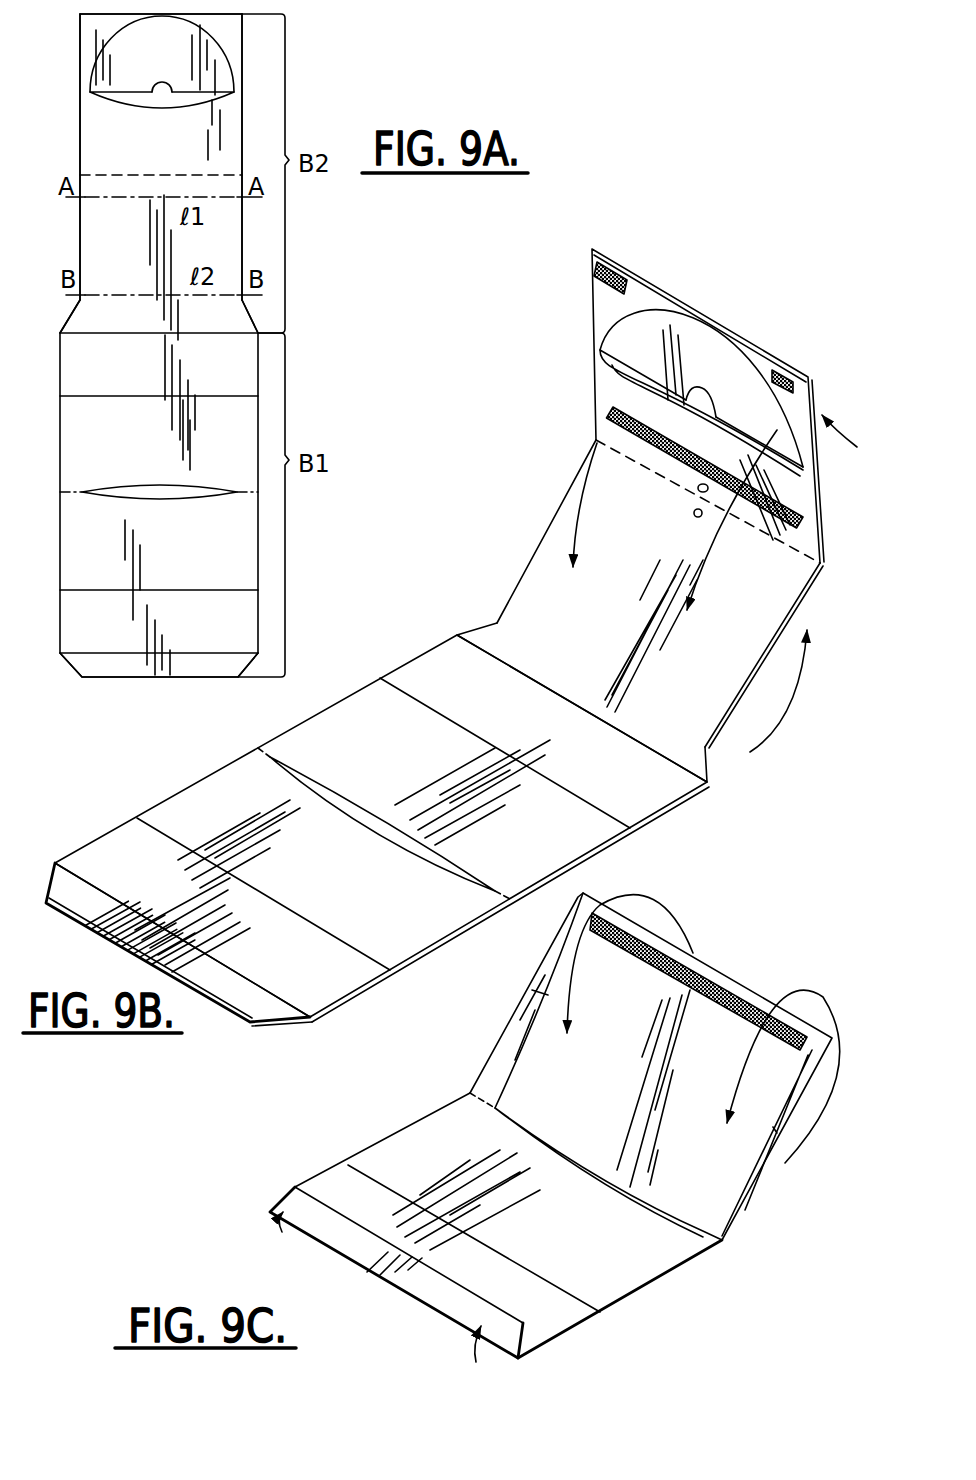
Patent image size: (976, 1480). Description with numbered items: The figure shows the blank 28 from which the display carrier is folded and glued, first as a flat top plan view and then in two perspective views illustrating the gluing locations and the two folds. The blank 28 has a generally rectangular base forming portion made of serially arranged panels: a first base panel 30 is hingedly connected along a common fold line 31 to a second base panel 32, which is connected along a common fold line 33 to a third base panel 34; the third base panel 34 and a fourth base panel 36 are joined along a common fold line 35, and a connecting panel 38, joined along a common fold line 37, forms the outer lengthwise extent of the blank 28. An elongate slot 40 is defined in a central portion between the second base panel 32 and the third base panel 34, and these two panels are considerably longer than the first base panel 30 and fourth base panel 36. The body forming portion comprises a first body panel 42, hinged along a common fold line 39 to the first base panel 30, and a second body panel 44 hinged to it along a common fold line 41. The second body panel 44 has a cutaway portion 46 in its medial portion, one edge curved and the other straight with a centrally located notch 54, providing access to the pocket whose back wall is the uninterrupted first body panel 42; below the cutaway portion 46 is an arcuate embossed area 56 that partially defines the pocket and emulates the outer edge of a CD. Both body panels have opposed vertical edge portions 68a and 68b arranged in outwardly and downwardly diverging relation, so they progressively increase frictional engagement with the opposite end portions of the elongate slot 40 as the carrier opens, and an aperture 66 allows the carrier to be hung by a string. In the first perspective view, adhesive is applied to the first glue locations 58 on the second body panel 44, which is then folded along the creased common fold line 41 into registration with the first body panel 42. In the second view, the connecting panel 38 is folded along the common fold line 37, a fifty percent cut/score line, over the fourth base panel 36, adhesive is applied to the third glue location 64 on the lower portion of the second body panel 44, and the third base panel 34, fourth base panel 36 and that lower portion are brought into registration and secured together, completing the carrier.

In FIG. 9A, the blank 28 is at (310, 58).
In FIG. 9B, the blank 28 is at (540, 466).
In FIG. 9C, the blank 28 is at (745, 1259).
In FIG. 9A, the first base panel 30 is at (70, 352).
In FIG. 9B, the first base panel 30 is at (418, 658).
In FIG. 9A, the common fold line 31 is at (73, 396).
In FIG. 9B, the common fold line 31 is at (440, 697).
In FIG. 9A, the second base panel 32 is at (74, 420).
In FIG. 9B, the second base panel 32 is at (352, 700).
In FIG. 9A, the common fold line 33 is at (73, 490).
In FIG. 9B, the common fold line 33 is at (262, 752).
In FIG. 9A, the third base panel 34 is at (72, 512).
In FIG. 9B, the third base panel 34 is at (228, 775).
In FIG. 9C, the third base panel 34 is at (435, 1123).
In FIG. 9A, the common fold line 35 is at (82, 590).
In FIG. 9B, the common fold line 35 is at (168, 833).
In FIG. 9C, the common fold line 35 is at (378, 1185).
In FIG. 9A, the fourth base panel 36 is at (73, 626).
In FIG. 9B, the fourth base panel 36 is at (115, 825).
In FIG. 9C, the fourth base panel 36 is at (317, 1192).
In FIG. 9A, the common fold line 37 is at (73, 654).
In FIG. 9B, the common fold line 37 is at (120, 860).
In FIG. 9C, the common fold line 37 is at (333, 1253).
In FIG. 9A, the connecting panel 38 is at (92, 670).
In FIG. 9B, the connecting panel 38 is at (107, 912).
In FIG. 9C, the connecting panel 38 is at (440, 1292).
In FIG. 9A, the common fold line 39 is at (92, 333).
In FIG. 9B, the common fold line 39 is at (528, 675).
In FIG. 9A, the elongate slot 40 is at (143, 492).
In FIG. 9B, the elongate slot 40 is at (447, 855).
In FIG. 9A, the common fold line 41 is at (107, 173).
In FIG. 9B, the common fold line 41 is at (793, 555).
In FIG. 9A, the first body panel 42 is at (90, 237).
In FIG. 9B, the first body panel 42 is at (557, 535).
In FIG. 9A, the second body panel 44 is at (95, 133).
In FIG. 9B, the second body panel 44 is at (613, 385).
In FIG. 9C, the second body panel 44 is at (550, 1047).
In FIG. 9A, the cutaway portion 46 is at (180, 98).
In FIG. 9B, the cutaway portion 46 is at (705, 407).
In FIG. 9A, the notch 54 is at (163, 92).
In FIG. 9B, the notch 54 is at (701, 402).
In FIG. 9A, the embossed area 56 is at (122, 53).
In FIG. 9B, the embossed area 56 is at (706, 323).
In FIG. 9B, the first glue locations 58 is at (606, 262).
In FIG. 9C, the third glue location 64 is at (708, 990).
In FIG. 9B, the aperture 66 is at (699, 492).
In FIG. 9A, the vertical edge portion 68a is at (80, 253).
In FIG. 9A, the vertical edge portion 68b is at (243, 248).